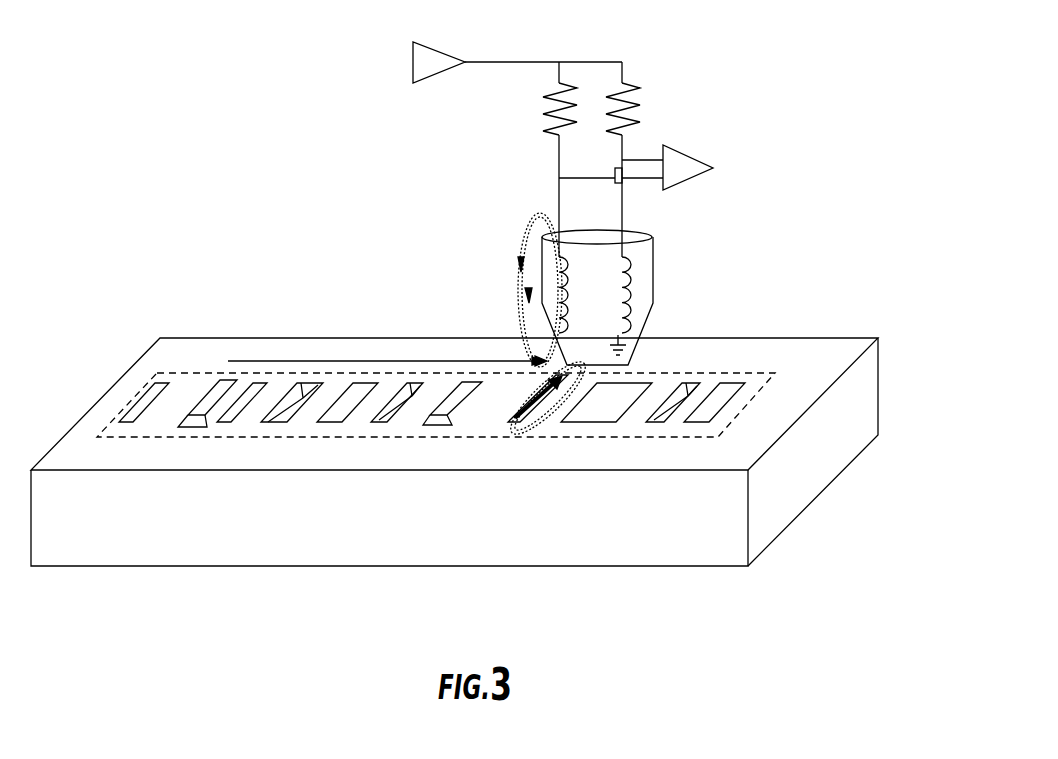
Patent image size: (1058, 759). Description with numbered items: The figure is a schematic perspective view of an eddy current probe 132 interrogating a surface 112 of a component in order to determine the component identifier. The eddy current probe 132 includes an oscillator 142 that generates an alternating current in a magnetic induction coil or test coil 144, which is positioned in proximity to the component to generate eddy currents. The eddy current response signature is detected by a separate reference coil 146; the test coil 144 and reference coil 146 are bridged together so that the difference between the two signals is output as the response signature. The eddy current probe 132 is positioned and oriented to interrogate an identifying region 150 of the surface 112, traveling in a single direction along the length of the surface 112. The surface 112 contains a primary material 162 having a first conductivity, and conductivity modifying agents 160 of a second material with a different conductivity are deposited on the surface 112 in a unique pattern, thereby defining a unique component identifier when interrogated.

The surface 112 is at (847, 359).
The eddy current probe 132 is at (742, 167).
The oscillator 142 is at (413, 62).
The test coil 144 is at (573, 288).
The reference coil 146 is at (638, 328).
The identifying region 150 is at (358, 437).
The conductivity modifying agents 160 is at (707, 413).
The primary material 162 is at (780, 413).